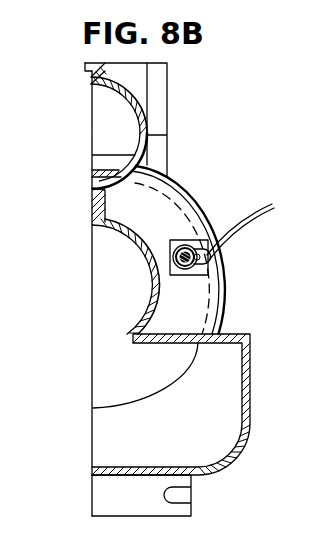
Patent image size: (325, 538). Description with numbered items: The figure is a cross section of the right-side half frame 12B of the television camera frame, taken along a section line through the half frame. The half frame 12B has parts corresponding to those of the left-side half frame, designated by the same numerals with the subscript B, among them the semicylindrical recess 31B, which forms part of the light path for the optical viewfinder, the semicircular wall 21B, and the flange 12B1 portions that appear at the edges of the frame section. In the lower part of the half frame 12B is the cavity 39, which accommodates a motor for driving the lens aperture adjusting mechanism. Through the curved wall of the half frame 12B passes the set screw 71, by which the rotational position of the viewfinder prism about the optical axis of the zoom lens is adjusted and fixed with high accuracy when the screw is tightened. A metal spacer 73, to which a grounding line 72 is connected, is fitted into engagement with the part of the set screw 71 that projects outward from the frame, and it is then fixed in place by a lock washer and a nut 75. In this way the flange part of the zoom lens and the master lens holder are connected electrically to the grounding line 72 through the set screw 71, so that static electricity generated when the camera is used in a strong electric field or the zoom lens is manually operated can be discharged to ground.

The right-side half frame 12B is at (206, 91).
The flange 12B1 is at (92, 70).
The semicylindrical recess 31B is at (97, 117).
The semicircular wall 21B is at (113, 236).
The cavity 39 is at (102, 441).
The set screw 71 is at (186, 245).
The grounding line 72 is at (243, 228).
The metal spacer 73 is at (205, 276).
The nut 75 is at (181, 276).